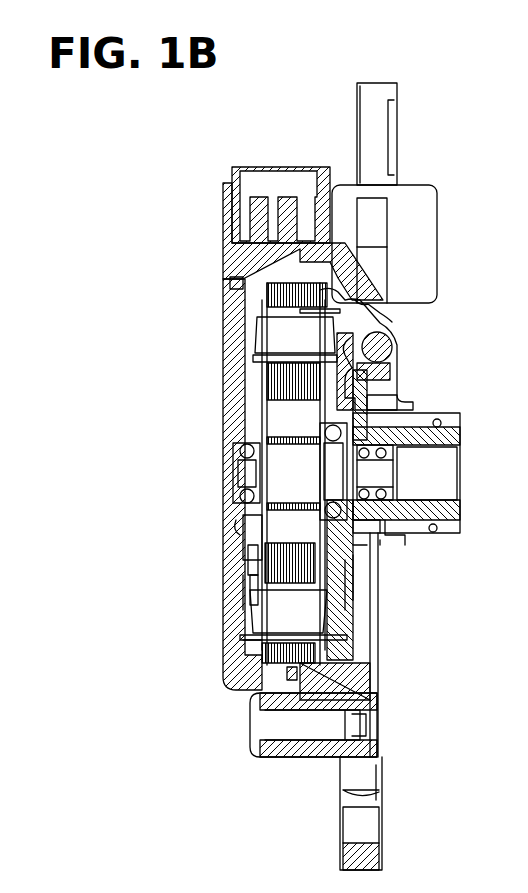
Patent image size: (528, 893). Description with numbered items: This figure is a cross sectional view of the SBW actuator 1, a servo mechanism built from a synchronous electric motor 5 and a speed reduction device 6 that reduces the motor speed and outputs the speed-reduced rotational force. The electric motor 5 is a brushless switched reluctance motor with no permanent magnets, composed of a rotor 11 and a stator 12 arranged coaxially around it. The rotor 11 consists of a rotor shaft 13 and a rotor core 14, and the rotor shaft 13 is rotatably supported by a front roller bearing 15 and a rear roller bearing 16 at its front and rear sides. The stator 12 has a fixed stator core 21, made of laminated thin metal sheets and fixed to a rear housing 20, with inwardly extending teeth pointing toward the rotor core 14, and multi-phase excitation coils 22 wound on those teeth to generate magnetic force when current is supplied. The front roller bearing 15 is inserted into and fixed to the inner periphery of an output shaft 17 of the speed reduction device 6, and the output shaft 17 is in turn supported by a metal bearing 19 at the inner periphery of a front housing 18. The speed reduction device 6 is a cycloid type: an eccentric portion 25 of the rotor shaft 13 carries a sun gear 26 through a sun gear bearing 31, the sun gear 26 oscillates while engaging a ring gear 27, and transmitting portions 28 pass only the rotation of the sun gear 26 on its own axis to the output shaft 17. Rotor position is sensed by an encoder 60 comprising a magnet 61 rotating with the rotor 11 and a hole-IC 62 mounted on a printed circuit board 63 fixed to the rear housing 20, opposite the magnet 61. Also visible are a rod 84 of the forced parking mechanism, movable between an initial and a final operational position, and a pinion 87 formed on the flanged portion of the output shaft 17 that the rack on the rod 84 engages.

The SBW actuator 1 is at (186, 221).
The electric motor 5 is at (107, 442).
The stator 12 is at (147, 302).
The stator core 21 is at (245, 300).
The excitation coils 22 is at (248, 340).
The rotor 11 is at (147, 388).
The rotor core 14 is at (265, 398).
The rotor shaft 13 is at (277, 447).
The rear roller bearing 16 is at (242, 493).
The printed circuit board 63 is at (243, 533).
The encoder 60 is at (139, 622).
The hole-IC 62 is at (255, 555).
The magnet 61 is at (255, 580).
The rear housing 20 is at (225, 684).
The rod 84 is at (410, 337).
The pinion 87 is at (405, 366).
The sun gear bearing 31 is at (397, 408).
The front roller bearing 15 is at (405, 424).
The metal bearing 19 is at (440, 424).
The output shaft 17 is at (402, 522).
The eccentric portion 25 is at (383, 540).
The transmitting portions 28 is at (363, 547).
The sun gear 26 is at (347, 548).
The ring gear 27 is at (340, 553).
The speed reduction device 6 is at (446, 700).
The front housing 18 is at (357, 697).